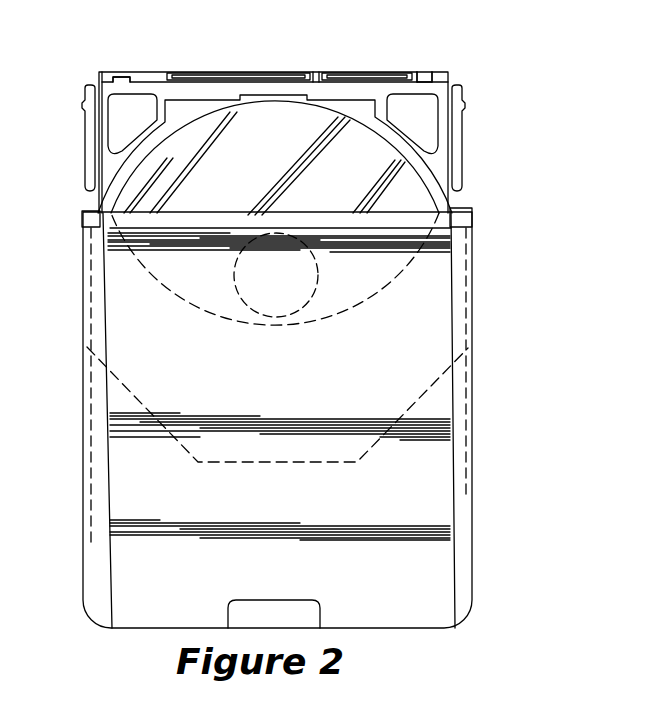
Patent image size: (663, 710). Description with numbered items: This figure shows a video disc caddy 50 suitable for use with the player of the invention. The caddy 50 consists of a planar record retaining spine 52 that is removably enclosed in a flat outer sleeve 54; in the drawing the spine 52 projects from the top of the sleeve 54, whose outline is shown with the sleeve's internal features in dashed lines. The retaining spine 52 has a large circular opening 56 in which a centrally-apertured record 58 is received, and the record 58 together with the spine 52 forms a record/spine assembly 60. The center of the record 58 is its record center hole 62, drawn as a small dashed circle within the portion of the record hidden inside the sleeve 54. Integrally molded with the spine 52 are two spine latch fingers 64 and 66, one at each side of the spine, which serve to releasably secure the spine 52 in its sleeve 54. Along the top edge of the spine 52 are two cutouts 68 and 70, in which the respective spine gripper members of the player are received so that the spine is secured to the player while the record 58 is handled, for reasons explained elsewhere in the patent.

The caddy 50 is at (500, 212).
The record retaining spine 52 is at (183, 83).
The outer sleeve 54 is at (440, 388).
The opening 56 is at (410, 146).
The record 58 is at (133, 177).
The record/spine assembly 60 is at (470, 67).
The record center hole 62 is at (311, 299).
The spine latch finger 64 is at (85, 129).
The spine latch finger 66 is at (462, 129).
The cutout 68 is at (122, 77).
The cutout 70 is at (421, 72).